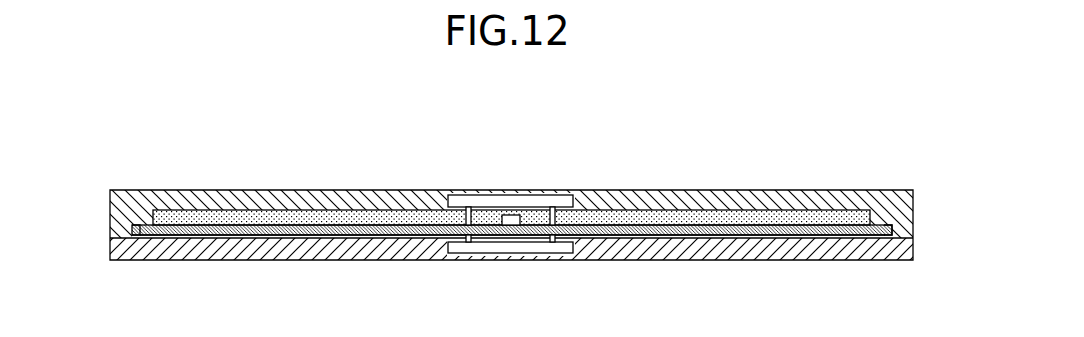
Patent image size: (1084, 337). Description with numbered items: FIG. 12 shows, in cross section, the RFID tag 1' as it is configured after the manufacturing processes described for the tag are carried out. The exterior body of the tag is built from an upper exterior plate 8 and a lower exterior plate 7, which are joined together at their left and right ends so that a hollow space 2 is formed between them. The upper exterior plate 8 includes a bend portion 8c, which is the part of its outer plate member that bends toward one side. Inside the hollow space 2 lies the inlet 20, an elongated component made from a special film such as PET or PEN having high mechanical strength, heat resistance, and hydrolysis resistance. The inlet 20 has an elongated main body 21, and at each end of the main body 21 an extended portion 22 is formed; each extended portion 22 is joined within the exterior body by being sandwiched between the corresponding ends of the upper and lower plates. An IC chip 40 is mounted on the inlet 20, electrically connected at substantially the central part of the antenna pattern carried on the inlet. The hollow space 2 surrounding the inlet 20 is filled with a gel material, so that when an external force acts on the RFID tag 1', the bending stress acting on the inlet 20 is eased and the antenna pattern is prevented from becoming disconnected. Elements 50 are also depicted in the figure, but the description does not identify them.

The RFID tag 1' is at (511, 152).
The hollow space 2 is at (172, 224).
The lower exterior plate 7 is at (128, 261).
The upper exterior plate 8 is at (128, 190).
The bend portion 8c is at (897, 200).
The inlet 20 is at (733, 218).
The main body 21 is at (775, 237).
The extended portion 22 is at (150, 230).
The IC chip 40 is at (510, 214).
The support plate 50 is at (539, 194).